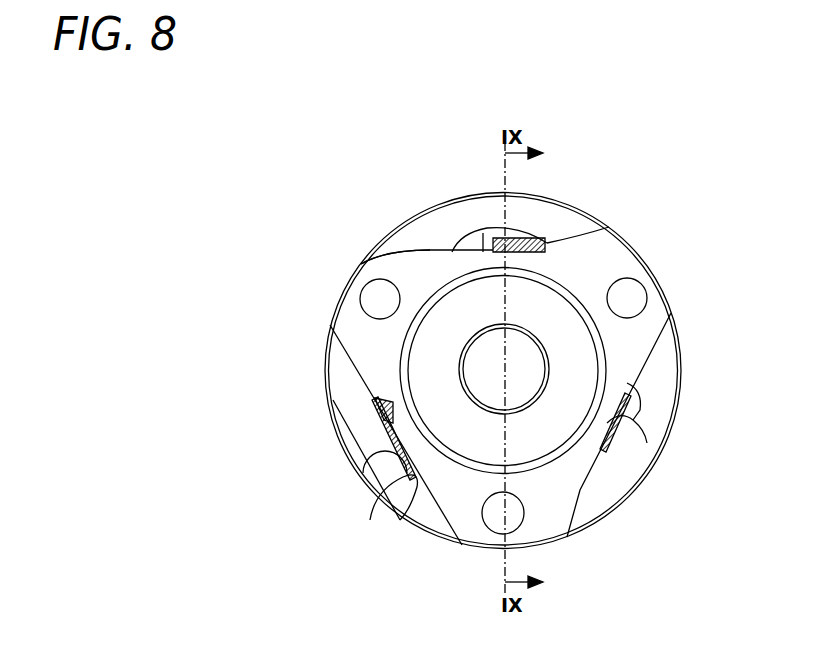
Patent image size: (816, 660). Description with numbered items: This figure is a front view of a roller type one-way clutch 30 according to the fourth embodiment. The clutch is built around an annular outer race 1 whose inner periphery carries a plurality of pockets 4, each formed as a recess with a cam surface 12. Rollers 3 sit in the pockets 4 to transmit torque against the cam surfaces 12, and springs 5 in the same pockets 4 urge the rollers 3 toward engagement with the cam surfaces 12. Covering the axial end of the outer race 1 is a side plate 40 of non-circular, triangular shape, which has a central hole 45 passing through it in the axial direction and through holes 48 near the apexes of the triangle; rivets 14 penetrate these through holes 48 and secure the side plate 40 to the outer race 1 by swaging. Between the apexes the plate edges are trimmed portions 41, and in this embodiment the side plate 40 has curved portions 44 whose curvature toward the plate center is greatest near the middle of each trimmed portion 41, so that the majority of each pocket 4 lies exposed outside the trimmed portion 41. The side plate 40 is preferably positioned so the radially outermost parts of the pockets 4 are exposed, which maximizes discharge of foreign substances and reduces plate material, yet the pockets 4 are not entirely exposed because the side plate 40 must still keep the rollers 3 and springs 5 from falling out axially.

The outer race 1 is at (407, 220).
The roller 3 is at (427, 470).
The pocket 4 is at (485, 229).
The spring 5 is at (383, 413).
The cam surface 12 is at (397, 467).
The rivet 14 is at (383, 302).
The roller type one-way clutch 30 is at (622, 206).
The side plate 40 is at (378, 267).
The trimmed portion 41 is at (585, 237).
The curved portion 44 is at (383, 433).
The central hole 45 is at (532, 367).
The through hole 48 is at (500, 532).